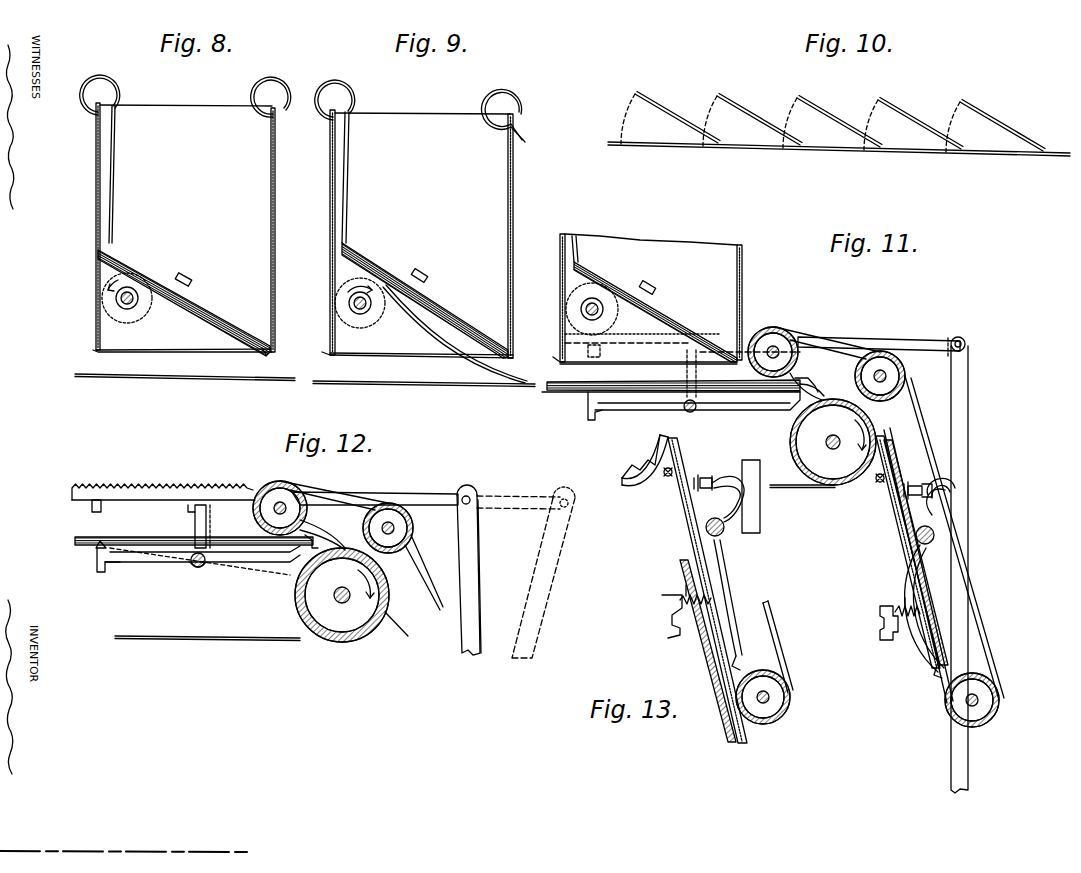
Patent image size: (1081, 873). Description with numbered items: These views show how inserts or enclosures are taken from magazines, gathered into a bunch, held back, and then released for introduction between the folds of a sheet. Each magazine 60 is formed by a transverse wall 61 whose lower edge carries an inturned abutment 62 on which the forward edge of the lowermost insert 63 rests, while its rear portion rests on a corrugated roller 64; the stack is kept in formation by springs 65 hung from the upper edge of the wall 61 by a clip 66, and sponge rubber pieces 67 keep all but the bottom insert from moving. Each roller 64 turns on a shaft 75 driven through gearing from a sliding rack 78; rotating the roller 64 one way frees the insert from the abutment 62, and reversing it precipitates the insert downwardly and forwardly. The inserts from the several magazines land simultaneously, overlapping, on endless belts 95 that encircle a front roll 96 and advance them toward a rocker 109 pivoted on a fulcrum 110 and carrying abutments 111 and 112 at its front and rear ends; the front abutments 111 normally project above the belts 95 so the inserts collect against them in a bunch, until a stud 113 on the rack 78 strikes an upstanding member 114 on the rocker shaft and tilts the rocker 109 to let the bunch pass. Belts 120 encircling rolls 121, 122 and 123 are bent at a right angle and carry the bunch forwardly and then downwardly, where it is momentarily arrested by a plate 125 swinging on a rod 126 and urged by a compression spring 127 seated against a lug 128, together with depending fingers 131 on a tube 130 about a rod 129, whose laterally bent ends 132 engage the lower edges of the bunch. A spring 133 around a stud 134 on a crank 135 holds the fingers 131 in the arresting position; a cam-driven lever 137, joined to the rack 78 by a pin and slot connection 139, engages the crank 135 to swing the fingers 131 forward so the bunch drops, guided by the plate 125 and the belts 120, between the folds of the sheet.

In FIG. 8, the magazine 60 is at (196, 105).
In FIG. 9, the magazine 60 is at (423, 113).
In FIG. 11, the magazine 60 is at (672, 243).
In FIG. 8, the wall 61 is at (95, 213).
In FIG. 9, the wall 61 is at (417, 234).
In FIG. 11, the wall 61 is at (560, 262).
In FIG. 8, the abutment 62 is at (93, 350).
In FIG. 8, the insert 63 is at (222, 312).
In FIG. 9, the insert 63 is at (455, 312).
In FIG. 10, the insert 63 is at (718, 97).
In FIG. 11, the insert 63 is at (668, 305).
In FIG. 12, the insert 63 is at (134, 537).
In FIG. 13, the insert 63 is at (730, 722).
In FIG. 8, the roller 64 is at (135, 314).
In FIG. 9, the roller 64 is at (359, 325).
In FIG. 11, the roller 64 is at (575, 297).
In FIG. 8, the spring 65 is at (114, 193).
In FIG. 9, the spring 65 is at (347, 194).
In FIG. 11, the spring 65 is at (575, 249).
In FIG. 8, the clip 66 is at (102, 103).
In FIG. 9, the clip 66 is at (337, 108).
In FIG. 8, the sponge rubber piece 67 is at (188, 280).
In FIG. 9, the sponge rubber piece 67 is at (422, 275).
In FIG. 11, the sponge rubber piece 67 is at (652, 283).
In FIG. 8, the shaft 75 is at (124, 306).
In FIG. 9, the shaft 75 is at (353, 304).
In FIG. 11, the shaft 75 is at (585, 311).
In FIG. 11, the rack 78 is at (556, 344).
In FIG. 12, the rack 78 is at (146, 488).
In FIG. 8, the belt 95 is at (186, 378).
In FIG. 9, the belt 95 is at (455, 386).
In FIG. 10, the belt 95 is at (833, 152).
In FIG. 11, the belt 95 is at (800, 488).
In FIG. 12, the belt 95 is at (292, 641).
In FIG. 11, the roll 96 is at (838, 480).
In FIG. 12, the roll 96 is at (349, 634).
In FIG. 13, the roll 96 is at (632, 463).
In FIG. 11, the rocker 109 is at (645, 404).
In FIG. 12, the rocker 109 is at (140, 563).
In FIG. 11, the fulcrum 110 is at (695, 408).
In FIG. 12, the fulcrum 110 is at (204, 570).
In FIG. 11, the abutment 111 is at (804, 380).
In FIG. 12, the abutment 111 is at (312, 540).
In FIG. 11, the abutment 112 is at (580, 394).
In FIG. 12, the abutment 112 is at (96, 550).
In FIG. 11, the stud 113 is at (600, 350).
In FIG. 12, the stud 113 is at (93, 512).
In FIG. 11, the upstanding member 114 is at (690, 378).
In FIG. 12, the upstanding member 114 is at (195, 527).
In FIG. 11, the belt 120 is at (921, 410).
In FIG. 12, the belt 120 is at (428, 585).
In FIG. 13, the belt 120 is at (782, 650).
In FIG. 11, the roll 121 is at (772, 328).
In FIG. 12, the roll 121 is at (274, 490).
In FIG. 11, the roll 122 is at (896, 373).
In FIG. 12, the roll 122 is at (405, 528).
In FIG. 11, the roll 123 is at (985, 698).
In FIG. 13, the roll 123 is at (778, 703).
In FIG. 11, the plate 125 is at (900, 552).
In FIG. 13, the plate 125 is at (690, 528).
In FIG. 11, the rod 126 is at (877, 482).
In FIG. 13, the rod 126 is at (667, 478).
In FIG. 11, the compression spring 127 is at (895, 605).
In FIG. 13, the compression spring 127 is at (684, 596).
In FIG. 11, the lug 128 is at (880, 626).
In FIG. 13, the lug 128 is at (676, 638).
In FIG. 11, the rod 129 is at (935, 527).
In FIG. 11, the tube 130 is at (935, 540).
In FIG. 13, the tube 130 is at (724, 540).
In FIG. 11, the finger 131 is at (925, 568).
In FIG. 13, the finger 131 is at (724, 584).
In FIG. 11, the laterally bent end 132 is at (934, 672).
In FIG. 13, the laterally bent end 132 is at (751, 661).
In FIG. 11, the spring 133 is at (918, 474).
In FIG. 13, the spring 133 is at (703, 476).
In FIG. 11, the stud 134 is at (915, 481).
In FIG. 11, the crank 135 is at (948, 492).
In FIG. 13, the crank 135 is at (724, 512).
In FIG. 11, the lever 137 is at (965, 435).
In FIG. 12, the lever 137 is at (472, 570).
In FIG. 13, the lever 137 is at (752, 468).
In FIG. 11, the pin and slot connection 139 is at (965, 346).
In FIG. 12, the pin and slot connection 139 is at (472, 494).